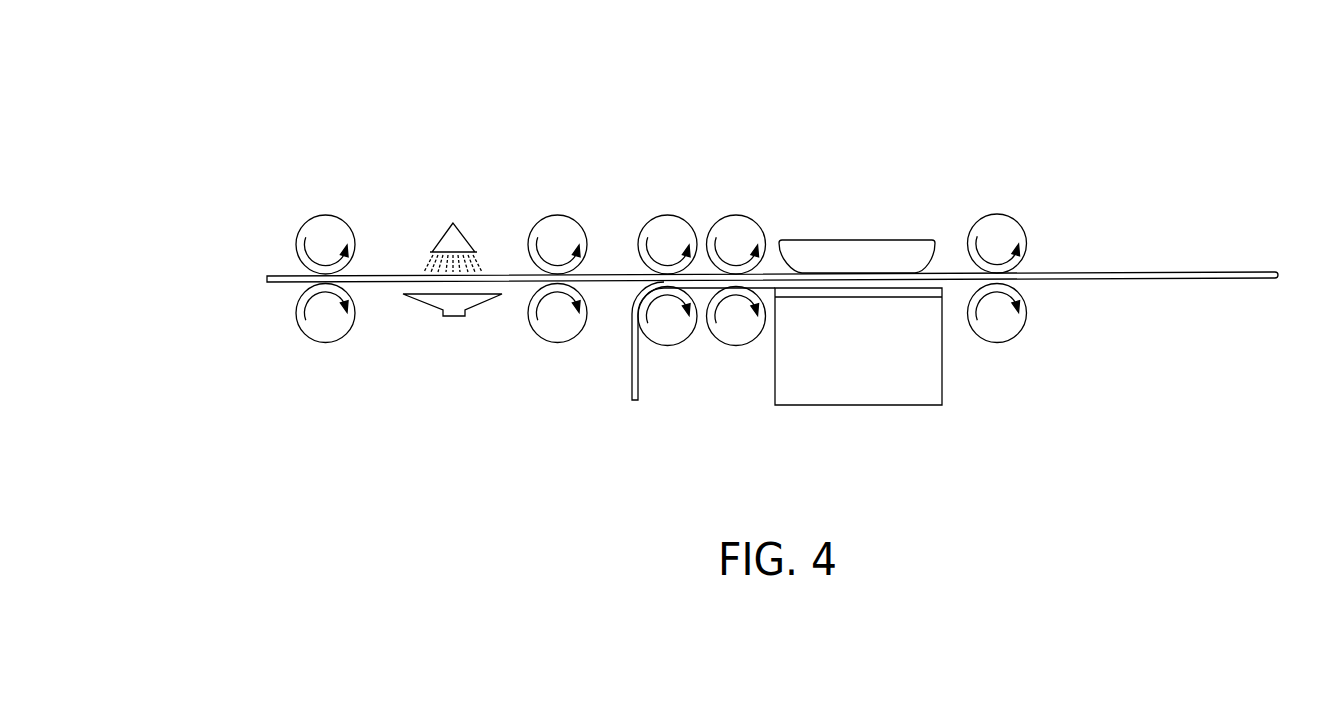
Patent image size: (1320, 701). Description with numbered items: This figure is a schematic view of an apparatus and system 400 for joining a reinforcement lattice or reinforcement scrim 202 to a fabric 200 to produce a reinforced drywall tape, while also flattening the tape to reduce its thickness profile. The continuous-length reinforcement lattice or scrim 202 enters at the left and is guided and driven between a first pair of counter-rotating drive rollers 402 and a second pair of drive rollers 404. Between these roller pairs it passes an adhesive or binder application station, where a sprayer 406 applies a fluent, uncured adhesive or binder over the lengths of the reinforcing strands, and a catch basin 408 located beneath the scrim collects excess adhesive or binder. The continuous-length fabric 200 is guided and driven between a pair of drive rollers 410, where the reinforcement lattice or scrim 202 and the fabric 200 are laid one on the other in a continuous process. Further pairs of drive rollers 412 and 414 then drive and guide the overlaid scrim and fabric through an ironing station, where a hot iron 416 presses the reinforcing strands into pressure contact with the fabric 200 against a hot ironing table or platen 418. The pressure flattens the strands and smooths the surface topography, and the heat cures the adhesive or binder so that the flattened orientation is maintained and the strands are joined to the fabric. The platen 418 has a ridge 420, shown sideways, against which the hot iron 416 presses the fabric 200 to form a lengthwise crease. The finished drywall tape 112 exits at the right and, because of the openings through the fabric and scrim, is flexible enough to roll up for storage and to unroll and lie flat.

The apparatus and system 400 is at (413, 126).
The first pair of counter-rotating drive rollers 402 is at (326, 205).
The second pair of drive rollers 404 is at (558, 205).
The sprayer 406 is at (462, 235).
The catch basin 408 is at (425, 303).
The pair of drive rollers 410 is at (668, 205).
The pair of drive rollers 412 is at (737, 205).
The pair of drive rollers 414 is at (997, 203).
The hot iron 416 is at (867, 248).
The hot ironing table or platen 418 is at (850, 387).
The ridge 420 is at (907, 292).
The drywall tape 112 is at (1143, 256).
The fabric 200 is at (632, 377).
The reinforcement lattice or reinforcement scrim 202 is at (281, 274).